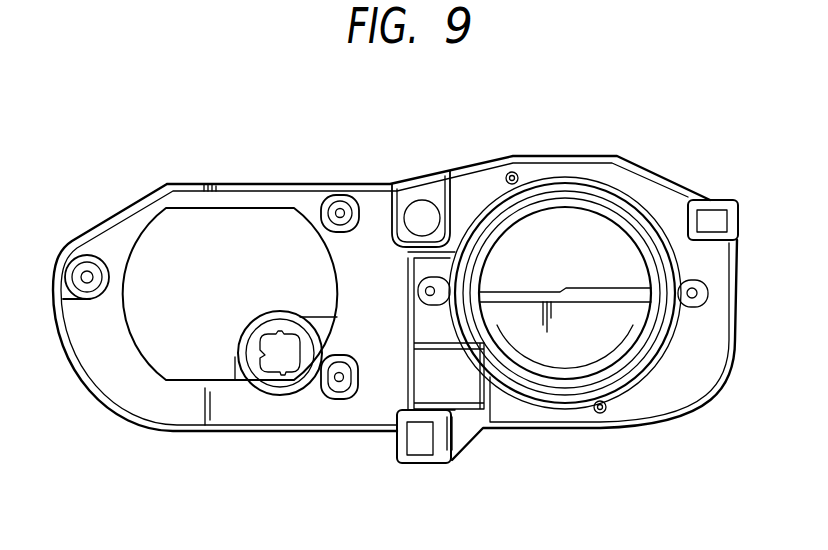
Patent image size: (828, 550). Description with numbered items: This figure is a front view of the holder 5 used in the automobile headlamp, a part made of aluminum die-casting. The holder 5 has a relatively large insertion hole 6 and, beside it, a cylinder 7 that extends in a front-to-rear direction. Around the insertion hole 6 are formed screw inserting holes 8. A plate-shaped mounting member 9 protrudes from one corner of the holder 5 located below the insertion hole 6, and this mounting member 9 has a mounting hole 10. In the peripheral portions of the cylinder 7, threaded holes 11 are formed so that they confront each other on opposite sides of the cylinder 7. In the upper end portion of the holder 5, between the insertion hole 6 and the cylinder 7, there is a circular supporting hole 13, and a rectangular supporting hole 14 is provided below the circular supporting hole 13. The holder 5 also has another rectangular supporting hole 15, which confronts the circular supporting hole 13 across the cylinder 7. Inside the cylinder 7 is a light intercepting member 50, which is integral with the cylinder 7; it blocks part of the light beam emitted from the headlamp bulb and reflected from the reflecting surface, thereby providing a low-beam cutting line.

The holder 5 is at (248, 184).
The insertion hole 6 is at (170, 363).
The cylinder 7 is at (598, 184).
The screw inserting holes 8 is at (87, 272).
The mounting member 9 is at (283, 322).
The mounting hole 10 is at (270, 377).
The threaded holes 11 is at (418, 291).
The circular supporting hole 13 is at (423, 205).
The rectangular supporting hole 14 is at (421, 443).
The rectangular supporting hole 15 is at (712, 212).
The light intercepting member 50 is at (580, 292).